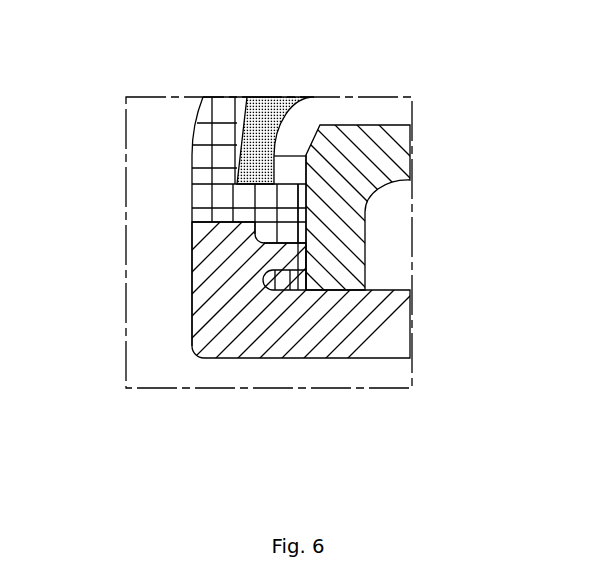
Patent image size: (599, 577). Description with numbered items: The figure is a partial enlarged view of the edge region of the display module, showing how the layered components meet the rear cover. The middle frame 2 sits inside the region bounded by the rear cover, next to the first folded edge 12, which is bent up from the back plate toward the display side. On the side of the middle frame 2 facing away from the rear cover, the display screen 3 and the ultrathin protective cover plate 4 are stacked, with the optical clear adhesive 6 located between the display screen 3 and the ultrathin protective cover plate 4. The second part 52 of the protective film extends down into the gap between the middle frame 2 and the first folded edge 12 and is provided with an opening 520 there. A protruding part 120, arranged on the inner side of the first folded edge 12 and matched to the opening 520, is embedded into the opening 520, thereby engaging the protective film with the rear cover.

The middle frame 2 is at (362, 143).
The display screen 3 is at (360, 102).
The ultrathin protective cover plate 4 is at (268, 108).
The optical clear adhesive 6 is at (249, 100).
The first folded edge 12 is at (230, 277).
The second part 52 is at (192, 184).
The protruding part 120 is at (288, 256).
The opening 520 is at (288, 278).